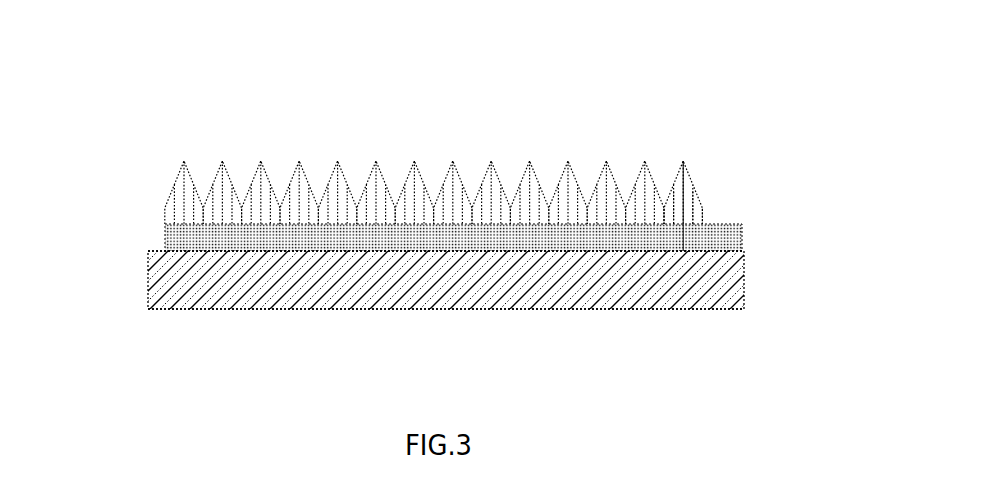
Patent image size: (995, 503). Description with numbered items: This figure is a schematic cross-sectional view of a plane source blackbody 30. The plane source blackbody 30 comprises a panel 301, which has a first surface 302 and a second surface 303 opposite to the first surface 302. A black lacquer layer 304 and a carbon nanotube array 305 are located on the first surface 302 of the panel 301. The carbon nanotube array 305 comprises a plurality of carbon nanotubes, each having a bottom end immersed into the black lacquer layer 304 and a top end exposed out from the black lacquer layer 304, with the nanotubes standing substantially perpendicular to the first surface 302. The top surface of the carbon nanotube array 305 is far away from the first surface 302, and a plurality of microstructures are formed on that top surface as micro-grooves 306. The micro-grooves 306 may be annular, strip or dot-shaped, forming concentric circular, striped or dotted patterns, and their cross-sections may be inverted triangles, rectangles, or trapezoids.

The plane source blackbody 30 is at (447, 90).
The panel 301 is at (687, 285).
The first surface 302 is at (158, 250).
The second surface 303 is at (168, 307).
The black lacquer layer 304 is at (742, 235).
The carbon nanotube array 305 is at (677, 217).
The micro-grooves 306 is at (323, 197).